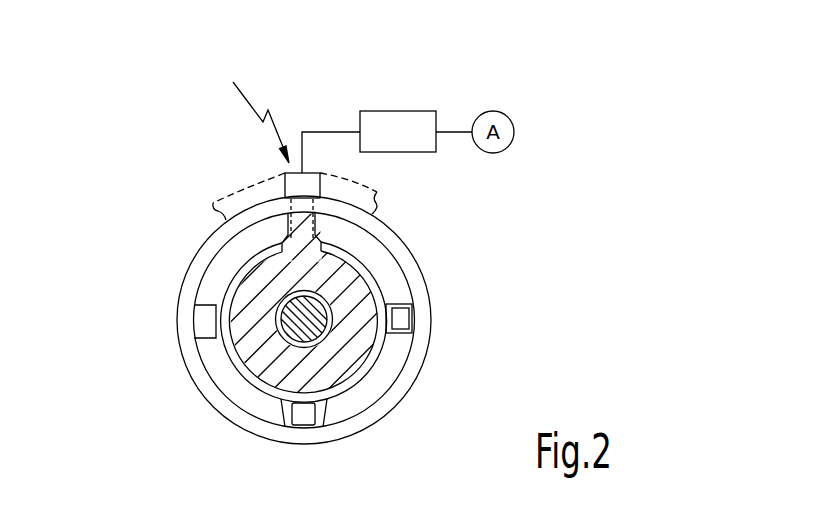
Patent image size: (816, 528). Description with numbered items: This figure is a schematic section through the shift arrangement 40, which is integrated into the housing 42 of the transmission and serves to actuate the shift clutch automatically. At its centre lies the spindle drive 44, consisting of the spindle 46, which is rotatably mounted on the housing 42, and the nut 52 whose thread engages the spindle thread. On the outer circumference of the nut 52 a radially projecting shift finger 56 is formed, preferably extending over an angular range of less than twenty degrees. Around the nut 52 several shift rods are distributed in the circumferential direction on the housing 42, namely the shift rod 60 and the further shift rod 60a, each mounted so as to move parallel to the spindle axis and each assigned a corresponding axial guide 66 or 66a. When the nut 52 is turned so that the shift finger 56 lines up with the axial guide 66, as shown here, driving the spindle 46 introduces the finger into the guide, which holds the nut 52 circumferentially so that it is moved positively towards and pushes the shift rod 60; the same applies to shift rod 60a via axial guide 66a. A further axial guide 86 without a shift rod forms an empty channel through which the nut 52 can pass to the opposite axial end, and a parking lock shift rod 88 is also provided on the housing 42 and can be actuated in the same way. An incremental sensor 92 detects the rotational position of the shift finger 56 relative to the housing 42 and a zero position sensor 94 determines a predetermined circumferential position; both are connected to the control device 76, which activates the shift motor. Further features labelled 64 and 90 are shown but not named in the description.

The shift arrangement 40 is at (568, 211).
The housing 42 is at (183, 273).
The spindle drive 44 is at (348, 366).
The spindle 46 is at (300, 318).
The nut 52 is at (335, 375).
The shift finger 56 is at (317, 222).
The shift rod 60 is at (285, 230).
The shift rod 60a is at (402, 321).
The inner ring 64 is at (392, 358).
The axial guide 66 is at (283, 228).
The axial guide 66a is at (407, 291).
The control device 76 is at (397, 127).
The further axial guide 86 is at (208, 325).
The parking lock shift rod 88 is at (304, 415).
The sensor direction arrow 90 is at (260, 108).
The incremental sensor 92 is at (373, 190).
The zero position sensor 94 is at (285, 176).